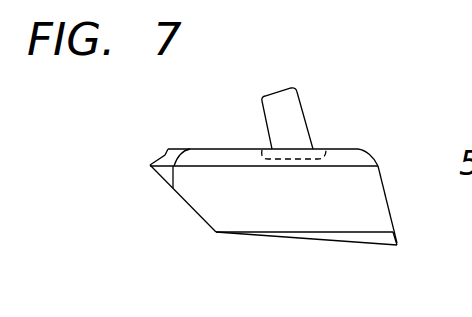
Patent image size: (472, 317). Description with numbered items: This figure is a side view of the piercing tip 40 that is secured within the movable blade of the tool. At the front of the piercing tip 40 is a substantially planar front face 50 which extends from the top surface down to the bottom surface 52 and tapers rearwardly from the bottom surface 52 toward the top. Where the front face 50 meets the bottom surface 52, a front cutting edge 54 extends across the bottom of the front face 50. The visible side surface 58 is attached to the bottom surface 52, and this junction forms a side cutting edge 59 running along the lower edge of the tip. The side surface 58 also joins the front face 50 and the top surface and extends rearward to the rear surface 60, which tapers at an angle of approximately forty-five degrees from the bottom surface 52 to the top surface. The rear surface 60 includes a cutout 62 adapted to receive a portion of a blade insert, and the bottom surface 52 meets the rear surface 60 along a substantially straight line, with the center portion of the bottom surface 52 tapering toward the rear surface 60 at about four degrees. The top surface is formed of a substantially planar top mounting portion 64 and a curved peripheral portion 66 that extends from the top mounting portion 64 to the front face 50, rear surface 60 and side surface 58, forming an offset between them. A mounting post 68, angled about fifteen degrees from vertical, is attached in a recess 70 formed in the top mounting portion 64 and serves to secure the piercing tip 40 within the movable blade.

The piercing tip 40 is at (157, 133).
The front face 50 is at (383, 188).
The bottom surface 52 is at (355, 237).
The front cutting edge 54 is at (397, 245).
The side surface 58 is at (308, 212).
The side cutting edge 59 is at (257, 236).
The rear surface 60 is at (197, 212).
The cutout 62 is at (163, 172).
The top mounting portion 64 is at (228, 149).
The curved peripheral portion 66 is at (347, 149).
The mounting post 68 is at (271, 97).
The recess 70 is at (263, 147).